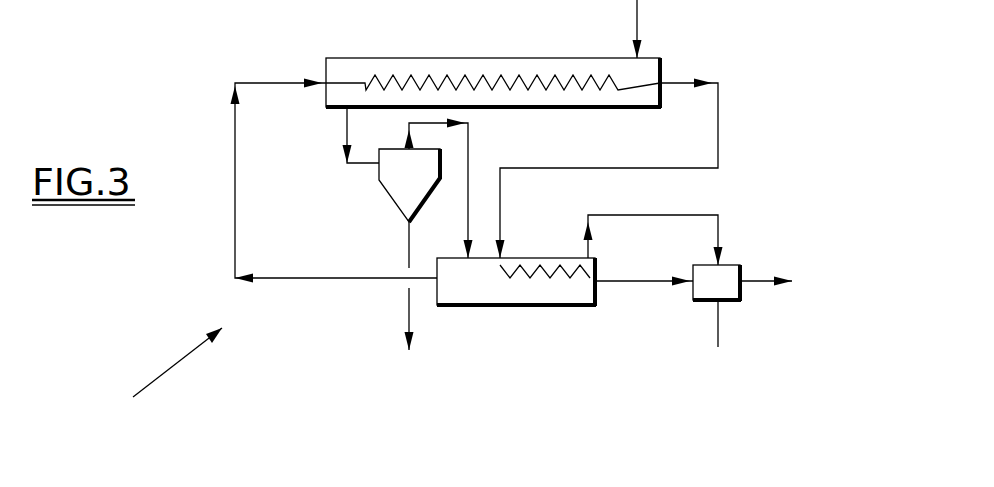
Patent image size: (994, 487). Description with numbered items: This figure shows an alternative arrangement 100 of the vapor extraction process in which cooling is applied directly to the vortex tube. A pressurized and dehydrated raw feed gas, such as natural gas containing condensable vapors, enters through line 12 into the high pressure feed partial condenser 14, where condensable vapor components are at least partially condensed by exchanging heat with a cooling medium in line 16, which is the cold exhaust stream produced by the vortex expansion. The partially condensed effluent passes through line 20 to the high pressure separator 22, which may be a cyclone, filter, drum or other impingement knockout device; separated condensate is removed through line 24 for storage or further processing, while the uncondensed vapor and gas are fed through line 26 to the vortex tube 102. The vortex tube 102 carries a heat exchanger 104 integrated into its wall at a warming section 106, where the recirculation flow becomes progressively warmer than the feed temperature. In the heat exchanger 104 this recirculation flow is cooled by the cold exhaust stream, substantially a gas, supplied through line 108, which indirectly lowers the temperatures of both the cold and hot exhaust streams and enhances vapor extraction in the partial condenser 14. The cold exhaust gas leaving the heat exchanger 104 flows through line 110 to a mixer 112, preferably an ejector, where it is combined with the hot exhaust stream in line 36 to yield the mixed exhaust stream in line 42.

The line 12 is at (640, 13).
The high pressure feed partial condenser 14 is at (460, 58).
The line 16 is at (323, 280).
The line 20 is at (343, 132).
The high pressure separator 22 is at (395, 200).
The line 24 is at (407, 313).
The line 26 is at (437, 118).
The line 36 is at (620, 278).
The line 42 is at (757, 277).
The alternative arrangement 100 is at (153, 374).
The vortex tube 102 is at (465, 307).
The heat exchanger 104 is at (540, 262).
The warming section 106 is at (568, 295).
The line 108 is at (720, 135).
The line 110 is at (625, 213).
The mixer 112 is at (730, 263).